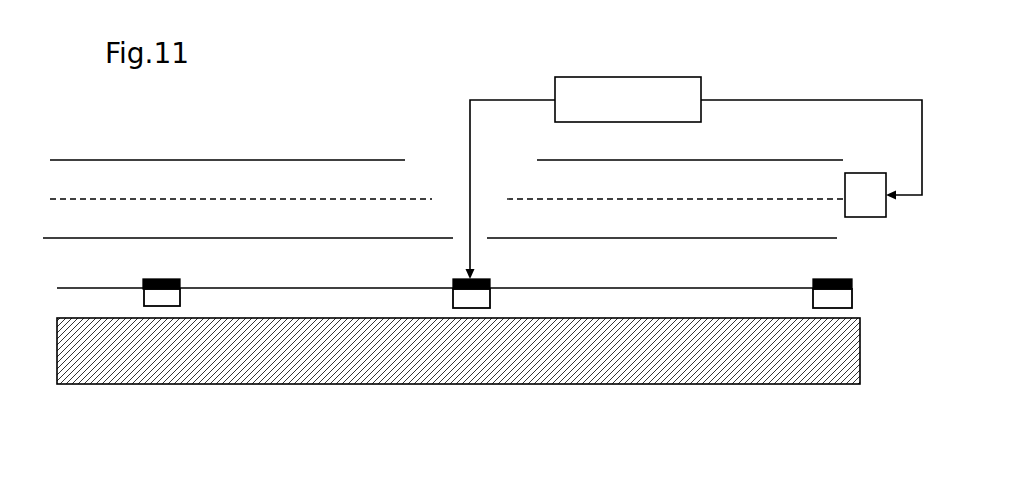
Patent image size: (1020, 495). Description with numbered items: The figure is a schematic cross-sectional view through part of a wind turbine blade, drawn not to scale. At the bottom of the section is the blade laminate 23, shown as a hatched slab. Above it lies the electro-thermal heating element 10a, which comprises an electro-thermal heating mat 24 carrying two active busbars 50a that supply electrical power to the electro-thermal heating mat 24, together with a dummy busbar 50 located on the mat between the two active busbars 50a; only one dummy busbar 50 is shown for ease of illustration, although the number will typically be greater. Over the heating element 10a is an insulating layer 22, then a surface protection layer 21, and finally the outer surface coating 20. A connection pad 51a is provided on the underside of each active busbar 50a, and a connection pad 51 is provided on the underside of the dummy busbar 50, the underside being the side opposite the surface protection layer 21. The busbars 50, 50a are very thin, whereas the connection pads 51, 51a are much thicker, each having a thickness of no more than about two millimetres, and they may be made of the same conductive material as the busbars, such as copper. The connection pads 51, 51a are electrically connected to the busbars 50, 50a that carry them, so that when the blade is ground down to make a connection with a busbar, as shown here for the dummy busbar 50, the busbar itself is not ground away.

The surface coating 20 is at (125, 160).
The surface protection layer 21 is at (75, 198).
The insulating layer 22 is at (63, 237).
The electro-thermal heating element 10a is at (242, 217).
The electro-thermal heating mat 24 is at (233, 287).
The dummy busbar 50 is at (455, 280).
The active busbar 50a is at (143, 279).
The connection pad 51 is at (480, 297).
The connection pad 51a is at (163, 295).
The blade laminate 23 is at (180, 372).